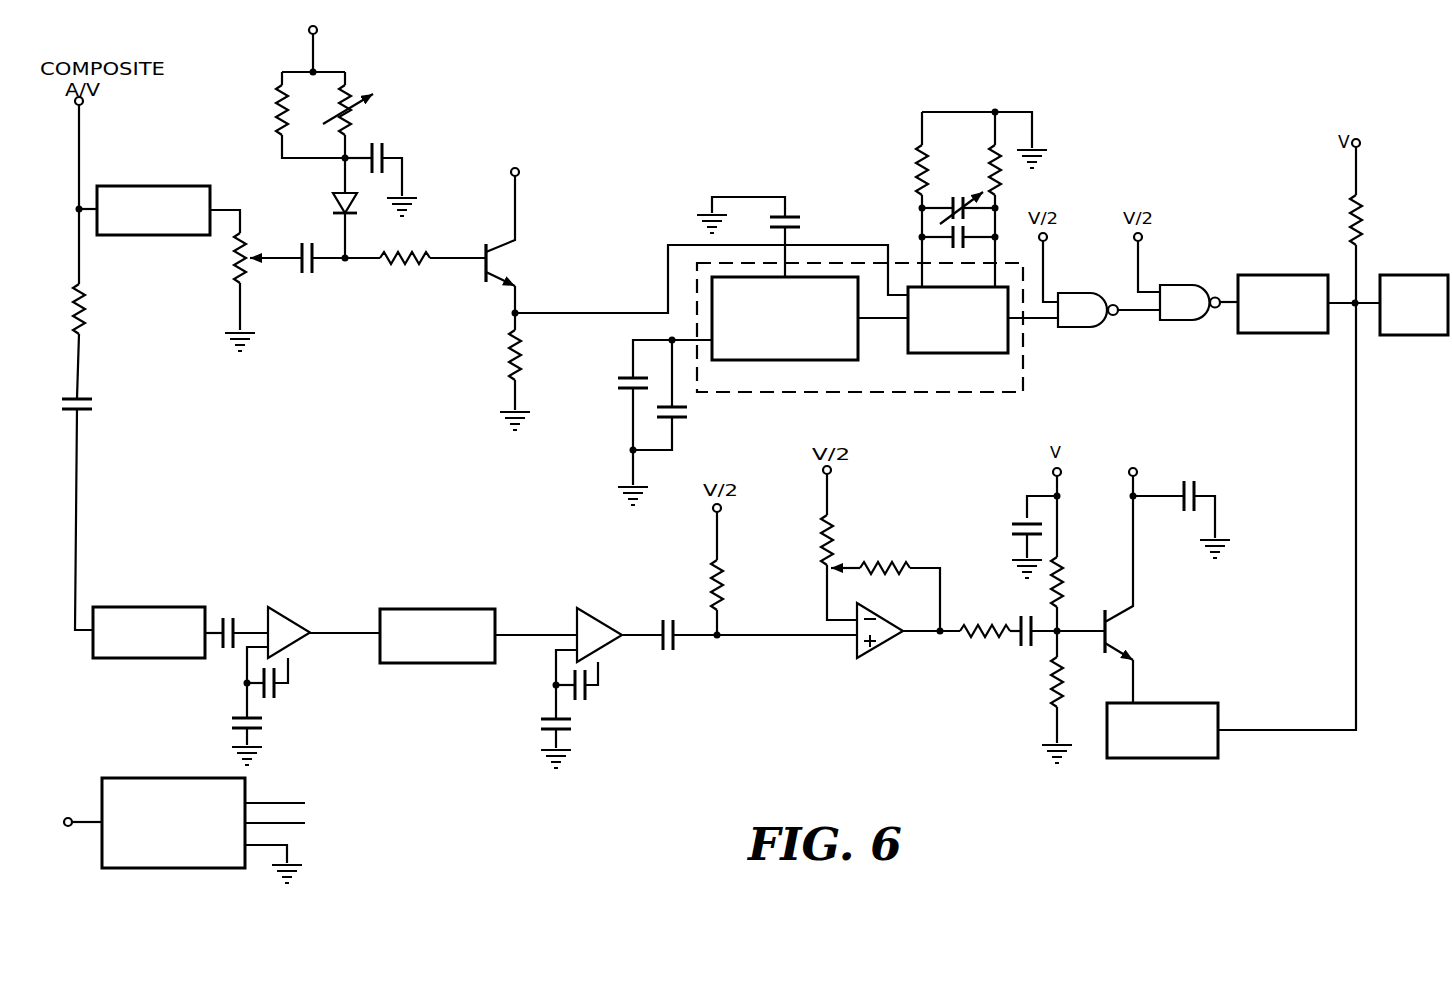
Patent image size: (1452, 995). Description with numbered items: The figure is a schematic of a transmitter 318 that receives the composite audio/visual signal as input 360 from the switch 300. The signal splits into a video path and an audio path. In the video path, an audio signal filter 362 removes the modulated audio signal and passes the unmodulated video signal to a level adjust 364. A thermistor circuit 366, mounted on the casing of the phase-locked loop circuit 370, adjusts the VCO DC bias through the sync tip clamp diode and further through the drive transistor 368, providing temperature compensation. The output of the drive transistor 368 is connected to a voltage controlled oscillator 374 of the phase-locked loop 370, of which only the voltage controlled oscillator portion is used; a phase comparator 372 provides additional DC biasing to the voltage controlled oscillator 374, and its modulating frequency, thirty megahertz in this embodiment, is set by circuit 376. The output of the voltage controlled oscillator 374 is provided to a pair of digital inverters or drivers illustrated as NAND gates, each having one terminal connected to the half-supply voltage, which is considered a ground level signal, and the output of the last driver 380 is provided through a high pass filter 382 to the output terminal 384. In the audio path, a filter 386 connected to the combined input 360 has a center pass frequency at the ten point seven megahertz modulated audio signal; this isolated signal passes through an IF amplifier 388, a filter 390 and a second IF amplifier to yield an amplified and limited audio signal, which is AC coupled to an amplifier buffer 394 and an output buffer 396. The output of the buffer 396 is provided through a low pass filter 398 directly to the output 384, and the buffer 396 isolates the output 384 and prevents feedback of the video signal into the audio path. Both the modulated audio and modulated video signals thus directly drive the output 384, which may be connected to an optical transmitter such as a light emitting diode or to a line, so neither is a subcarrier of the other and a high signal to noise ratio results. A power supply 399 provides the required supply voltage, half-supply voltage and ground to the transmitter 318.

The switch 300 is at (79, 143).
The transmitter 318 is at (119, 692).
The input 360 is at (76, 101).
The audio signal filter 362 is at (153, 236).
The level adjust 364 is at (255, 285).
The thermistor circuit 366 is at (398, 110).
The drive transistor 368 is at (468, 323).
The phase-locked loop circuit 370 is at (830, 392).
The phase comparator 372 is at (845, 358).
The voltage controlled oscillator 374 is at (980, 353).
The circuit 376 is at (890, 172).
The driver 380 is at (1185, 320).
The high pass filter 382 is at (1293, 333).
The output terminal 384 is at (1370, 308).
The filter 386 is at (157, 658).
The IF amplifier 388 is at (292, 617).
The filter 390 is at (445, 609).
The amplifier buffer 394 is at (877, 647).
The output buffer 396 is at (1150, 630).
The low pass filter 398 is at (1182, 703).
The power supply 399 is at (177, 778).